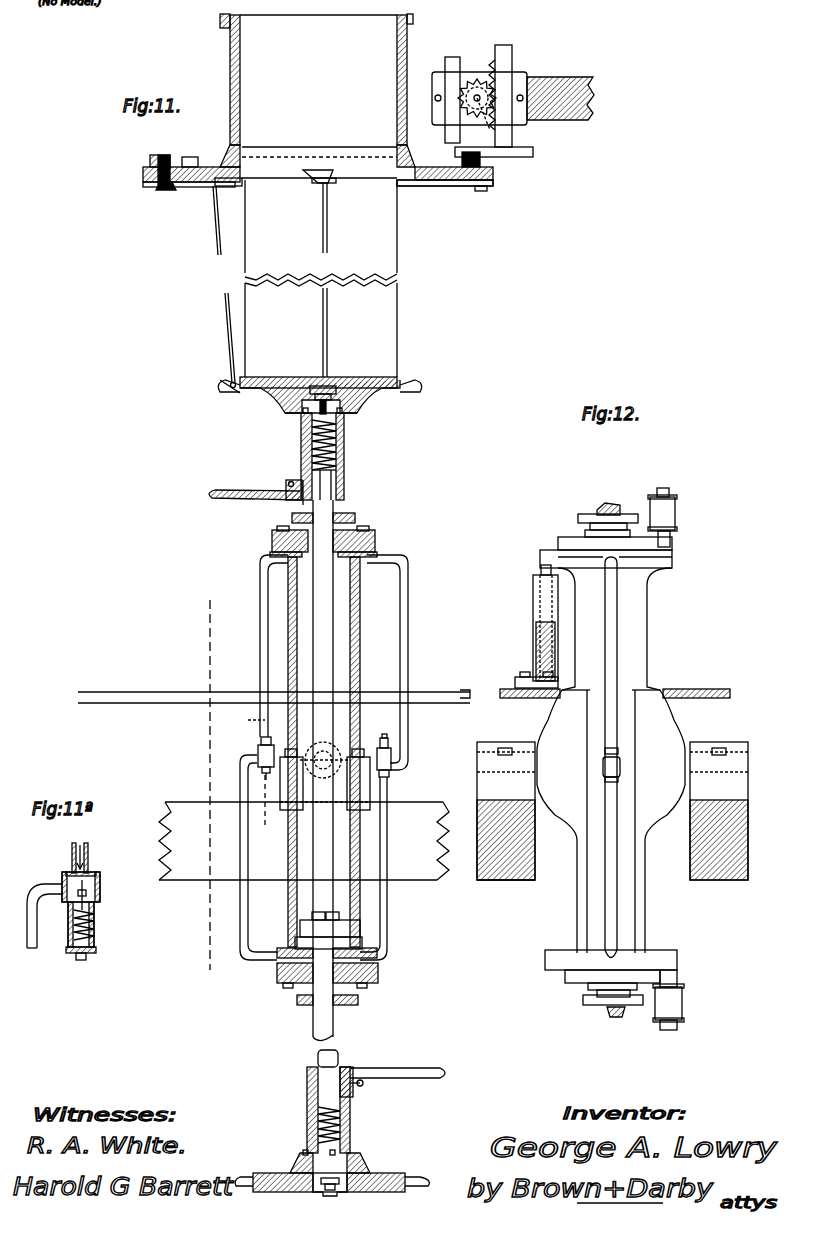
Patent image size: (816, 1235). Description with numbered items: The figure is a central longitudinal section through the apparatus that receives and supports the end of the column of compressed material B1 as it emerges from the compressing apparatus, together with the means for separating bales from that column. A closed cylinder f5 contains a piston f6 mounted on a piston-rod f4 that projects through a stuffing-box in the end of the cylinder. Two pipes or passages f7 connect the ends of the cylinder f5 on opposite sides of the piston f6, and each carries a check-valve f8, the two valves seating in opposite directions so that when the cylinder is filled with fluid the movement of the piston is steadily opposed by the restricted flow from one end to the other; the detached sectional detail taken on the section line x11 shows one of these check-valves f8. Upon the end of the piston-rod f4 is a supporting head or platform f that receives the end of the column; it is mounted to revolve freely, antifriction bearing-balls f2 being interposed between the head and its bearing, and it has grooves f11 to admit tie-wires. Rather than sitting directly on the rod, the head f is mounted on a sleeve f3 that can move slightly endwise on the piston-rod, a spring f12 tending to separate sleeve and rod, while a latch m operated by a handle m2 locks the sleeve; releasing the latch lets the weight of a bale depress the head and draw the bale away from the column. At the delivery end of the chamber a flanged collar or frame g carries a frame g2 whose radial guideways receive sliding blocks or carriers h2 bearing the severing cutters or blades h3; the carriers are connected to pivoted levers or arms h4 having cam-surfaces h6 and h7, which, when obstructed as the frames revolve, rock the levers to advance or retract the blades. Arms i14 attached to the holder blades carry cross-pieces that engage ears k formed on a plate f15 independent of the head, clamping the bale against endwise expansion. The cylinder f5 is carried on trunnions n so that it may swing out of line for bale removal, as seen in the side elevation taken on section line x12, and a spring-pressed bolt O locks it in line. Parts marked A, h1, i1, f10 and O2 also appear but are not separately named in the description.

In FIG. 11, the flanged collar or frame g is at (230, 82).
In FIG. 11, the frame g2 is at (143, 172).
In FIG. 11, the rack bar h1 is at (452, 143).
In FIG. 11, the cutter blocks or carriers h2 is at (172, 187).
In FIG. 11, the severing or separating cutters or blades h3 is at (413, 186).
In FIG. 11, the levers or arms h4 is at (160, 155).
In FIG. 11, the cam-surface h6 is at (503, 125).
In FIG. 11, the cam-surface h7 is at (513, 157).
In FIG. 11, the frame / support A is at (562, 78).
In FIG. 12, the frame / support A is at (508, 862).
In FIG. 11, the column of compressed material B1 is at (321, 278).
In FIG. 11, the plate i1 is at (228, 186).
In FIG. 11, the arm or rod i14 is at (259, 279).
In FIG. 11, the ears k is at (214, 382).
In FIG. 11, the supporting head or platform f is at (370, 400).
In FIG. 11, the grooves f11 is at (315, 378).
In FIG. 11, the plate f15 is at (250, 400).
In FIG. 11, the antifriction bearing-balls f2 is at (300, 420).
In FIG. 11, the spring f12 is at (330, 445).
In FIG. 11, the sleeve f3 is at (343, 468).
In FIG. 11, the latch m is at (293, 480).
In FIG. 11, the handle m2 is at (244, 496).
In FIG. 11, the piston-rod f4 is at (330, 617).
In FIG. 12, the piston-rod f4 is at (617, 508).
In FIG. 11, the closed cylinder f5 is at (357, 655).
In FIG. 12, the closed cylinder f5 is at (647, 627).
In FIG. 11, the pipes or passages f7 is at (408, 662).
In FIG. 12, the pipes or passages f7 is at (612, 612).
In FIG. 11, the check-valve f8 is at (258, 750).
In FIG. 11A, the check-valve f8 is at (90, 895).
In FIG. 12, the check-valve f8 is at (620, 765).
In FIG. 11, the trunnions n is at (333, 755).
In FIG. 12, the trunnions n is at (470, 750).
In FIG. 11, the section line X11 X11 x11 is at (251, 772).
In FIG. 11, the section line X12 X12 x12 is at (206, 789).
In FIG. 11, the piston f6 is at (355, 927).
In FIG. 11, the groove f10 is at (338, 1200).
In FIG. 12, the spring-pressed bolt O is at (545, 598).
In FIG. 12, the gauge fitting O2 is at (541, 565).